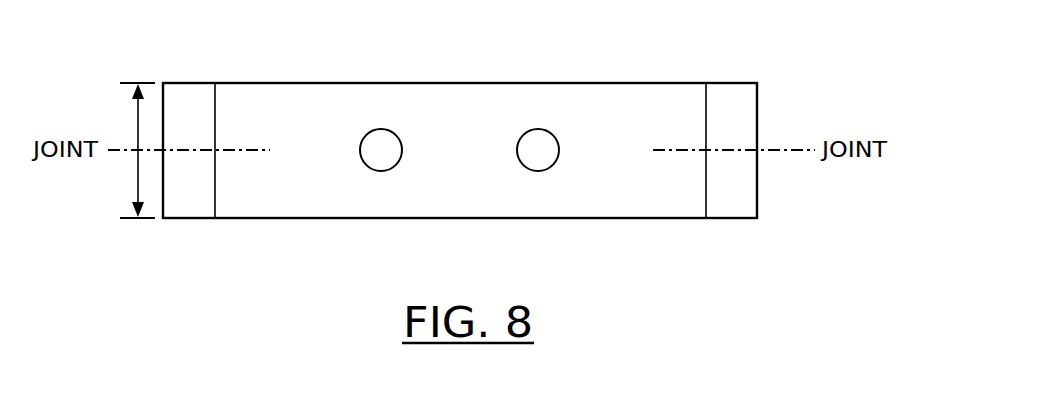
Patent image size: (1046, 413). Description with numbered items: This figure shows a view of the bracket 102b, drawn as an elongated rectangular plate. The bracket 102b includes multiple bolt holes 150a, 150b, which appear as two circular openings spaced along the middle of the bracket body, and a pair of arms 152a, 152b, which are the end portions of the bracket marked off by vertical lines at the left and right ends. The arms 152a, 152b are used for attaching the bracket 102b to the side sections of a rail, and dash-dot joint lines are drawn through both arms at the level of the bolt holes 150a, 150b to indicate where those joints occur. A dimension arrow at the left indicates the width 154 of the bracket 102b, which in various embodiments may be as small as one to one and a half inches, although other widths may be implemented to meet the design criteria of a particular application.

The bracket 102b is at (443, 83).
The arm 152a is at (193, 82).
The arm 152b is at (733, 82).
The bolt hole 150a is at (370, 132).
The bolt hole 150b is at (527, 132).
The width 154 is at (126, 197).